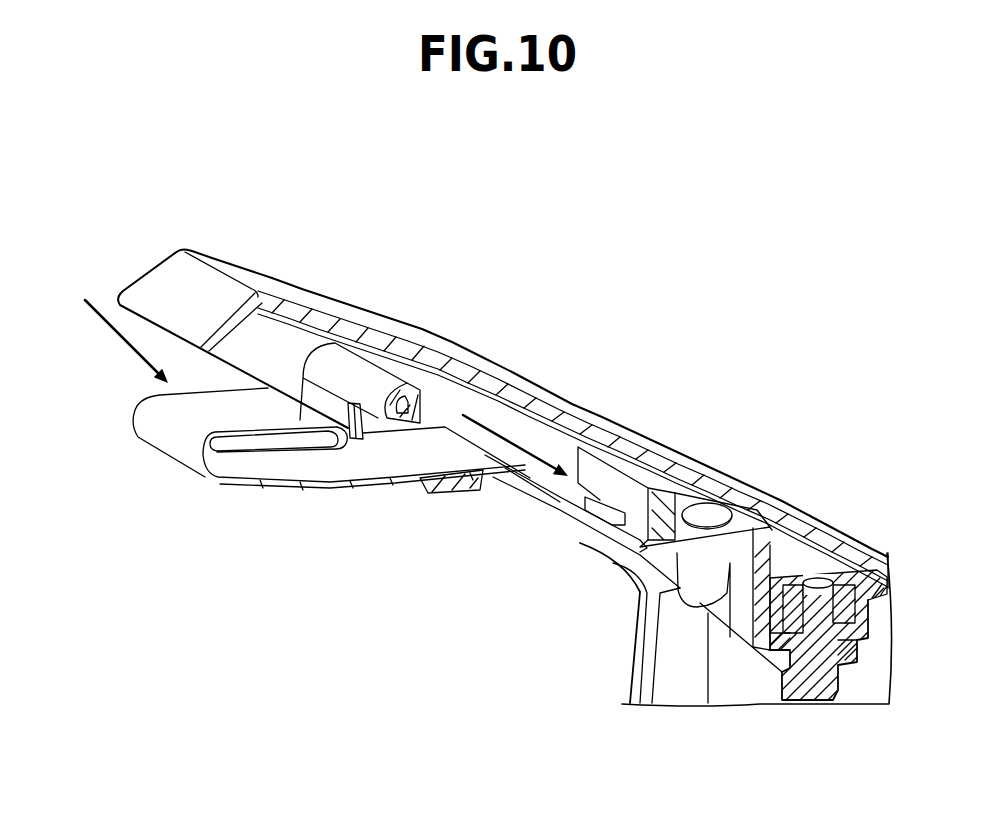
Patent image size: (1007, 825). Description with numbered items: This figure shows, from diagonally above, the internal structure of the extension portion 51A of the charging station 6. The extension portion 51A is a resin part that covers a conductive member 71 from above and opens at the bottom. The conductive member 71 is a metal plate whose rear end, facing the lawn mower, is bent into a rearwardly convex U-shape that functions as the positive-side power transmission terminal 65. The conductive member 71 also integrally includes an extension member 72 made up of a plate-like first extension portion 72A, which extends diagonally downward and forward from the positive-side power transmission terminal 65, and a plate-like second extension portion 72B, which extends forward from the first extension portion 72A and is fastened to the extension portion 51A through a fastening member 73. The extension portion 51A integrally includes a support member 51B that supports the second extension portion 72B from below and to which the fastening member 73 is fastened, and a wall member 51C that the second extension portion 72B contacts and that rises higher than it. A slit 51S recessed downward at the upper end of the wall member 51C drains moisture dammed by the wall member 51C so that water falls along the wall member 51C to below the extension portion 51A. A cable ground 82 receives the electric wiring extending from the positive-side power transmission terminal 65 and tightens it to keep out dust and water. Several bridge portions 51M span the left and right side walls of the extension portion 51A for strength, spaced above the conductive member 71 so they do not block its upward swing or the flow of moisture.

The charging station 6 is at (503, 368).
The extension portion 51A is at (428, 330).
The bridge portions 51M is at (360, 372).
The support member 51B is at (703, 577).
The slit 51S is at (718, 479).
The wall member 51C is at (758, 503).
The positive-side power transmission terminal 65 is at (168, 443).
The conductive member 71 is at (251, 510).
The extension member 72 is at (572, 565).
The first extension portion 72A is at (525, 486).
The second extension portion 72B is at (677, 563).
The fastening member 73 is at (693, 503).
The cable ground 82 is at (818, 578).